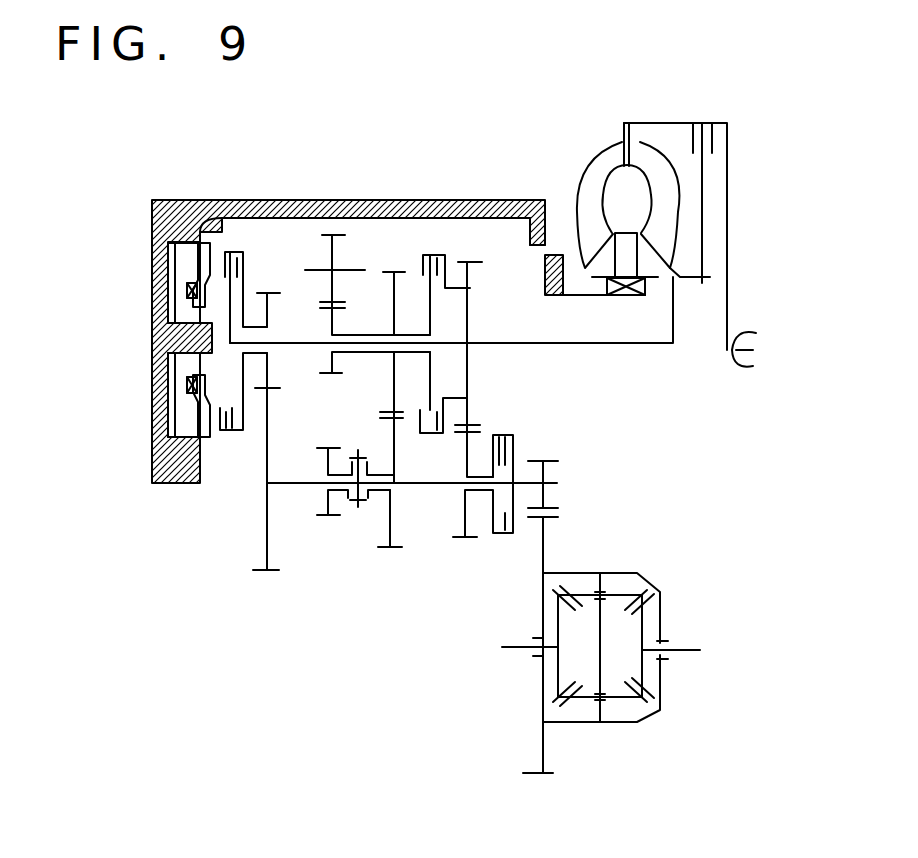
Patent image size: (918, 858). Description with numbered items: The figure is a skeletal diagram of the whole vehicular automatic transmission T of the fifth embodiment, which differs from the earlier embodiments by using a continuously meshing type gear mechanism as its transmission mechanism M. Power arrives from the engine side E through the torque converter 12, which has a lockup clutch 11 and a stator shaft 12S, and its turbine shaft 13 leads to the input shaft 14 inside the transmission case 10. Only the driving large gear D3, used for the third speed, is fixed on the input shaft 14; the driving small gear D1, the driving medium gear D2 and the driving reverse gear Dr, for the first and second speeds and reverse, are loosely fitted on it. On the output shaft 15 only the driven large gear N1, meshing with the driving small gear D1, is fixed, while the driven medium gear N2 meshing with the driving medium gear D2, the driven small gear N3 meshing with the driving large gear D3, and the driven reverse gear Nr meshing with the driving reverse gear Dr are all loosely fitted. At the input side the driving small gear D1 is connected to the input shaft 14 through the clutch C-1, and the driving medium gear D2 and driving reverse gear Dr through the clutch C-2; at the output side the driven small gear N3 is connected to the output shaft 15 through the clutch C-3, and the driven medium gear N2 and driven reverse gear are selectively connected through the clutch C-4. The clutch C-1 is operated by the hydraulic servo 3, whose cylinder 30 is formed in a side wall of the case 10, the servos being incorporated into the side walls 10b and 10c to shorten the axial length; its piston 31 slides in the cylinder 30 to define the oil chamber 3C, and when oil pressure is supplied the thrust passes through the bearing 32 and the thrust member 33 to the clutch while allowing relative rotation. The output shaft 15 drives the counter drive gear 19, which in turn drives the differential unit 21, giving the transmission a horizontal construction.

The hydraulic servo 3 is at (150, 355).
The oil chamber 3C is at (175, 398).
The transmission case 10 is at (198, 212).
The side wall 10b is at (220, 210).
The side wall 10c is at (531, 236).
The lockup clutch 11 is at (712, 140).
The torque converter 12 is at (623, 133).
The stator shaft 12S is at (578, 298).
The turbine shaft 13 is at (623, 350).
The input shaft 14 is at (504, 344).
The output shaft 15 is at (548, 480).
The counter drive gear 19 is at (541, 460).
The differential unit 21 is at (664, 592).
The cylinder 30 is at (172, 263).
The piston 31 is at (180, 425).
The bearing 32 is at (168, 300).
The thrust member 33 is at (210, 432).
The clutch C-1 is at (258, 250).
The clutch C-2 is at (421, 262).
The clutch C-3 is at (487, 447).
The clutch C-4 is at (360, 458).
The driving small gear D1 is at (271, 291).
The driving medium gear D2 is at (385, 273).
The driving large gear D3 is at (470, 306).
The driving reverse gear Dr is at (328, 378).
The driven large gear N1 is at (263, 573).
The driven medium gear N2 is at (392, 550).
The driven small gear N3 is at (464, 540).
The driven reverse gear Nr is at (325, 517).
The transmission mechanism M is at (363, 612).
The automatic transmission T is at (417, 198).
The engine E is at (744, 349).